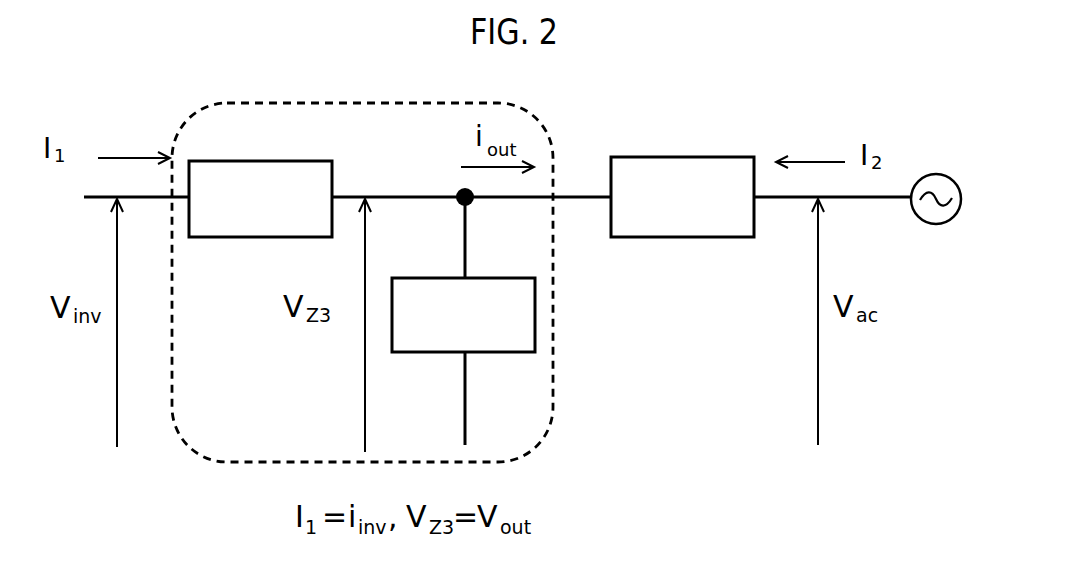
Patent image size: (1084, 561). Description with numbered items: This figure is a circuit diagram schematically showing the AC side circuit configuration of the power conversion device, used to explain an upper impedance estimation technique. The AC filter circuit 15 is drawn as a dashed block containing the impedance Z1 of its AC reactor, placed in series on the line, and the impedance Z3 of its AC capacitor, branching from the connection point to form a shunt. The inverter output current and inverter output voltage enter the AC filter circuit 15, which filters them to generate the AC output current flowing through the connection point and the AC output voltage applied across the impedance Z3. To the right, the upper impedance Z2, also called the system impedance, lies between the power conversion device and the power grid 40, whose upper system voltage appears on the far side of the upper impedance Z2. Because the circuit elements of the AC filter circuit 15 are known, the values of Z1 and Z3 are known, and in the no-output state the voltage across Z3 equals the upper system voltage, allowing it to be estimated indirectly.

The AC filter circuit 15 is at (550, 425).
The power grid 40 is at (938, 176).
The impedance of the AC reactor Z1 is at (260, 199).
The upper impedance Z2 is at (682, 197).
The impedance of the AC capacitor Z3 is at (463, 315).